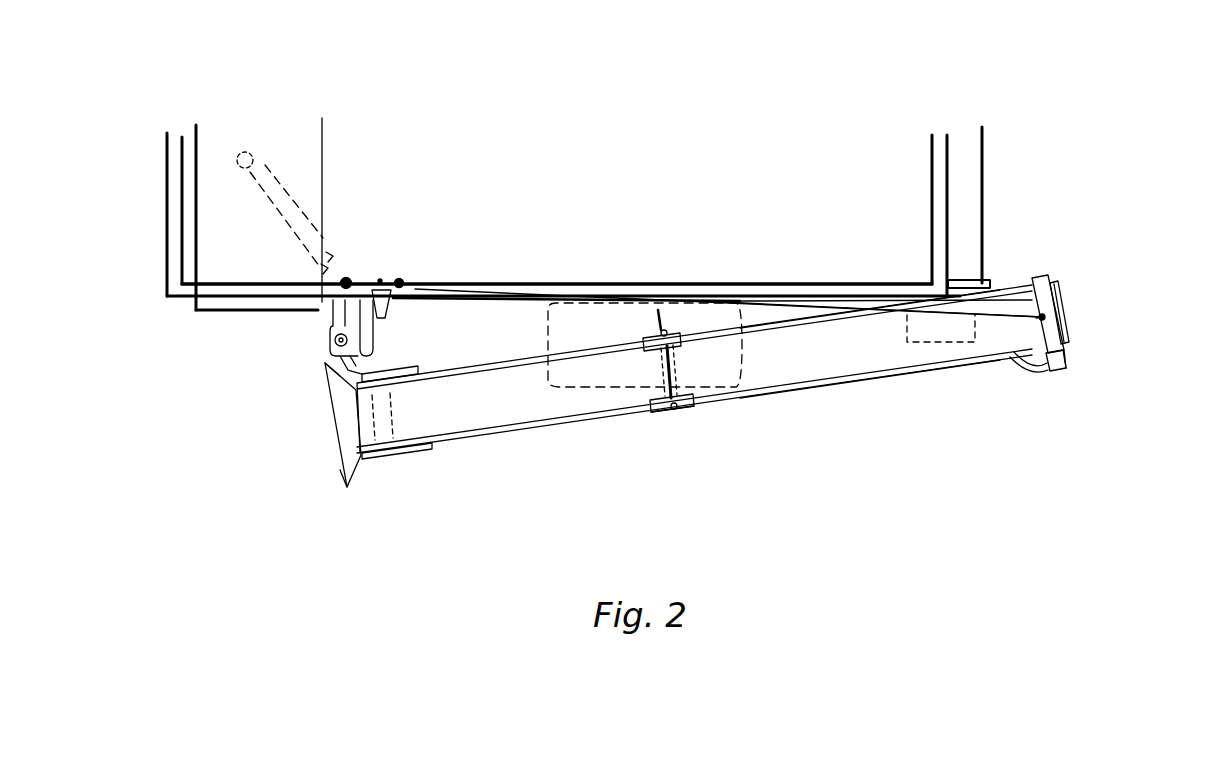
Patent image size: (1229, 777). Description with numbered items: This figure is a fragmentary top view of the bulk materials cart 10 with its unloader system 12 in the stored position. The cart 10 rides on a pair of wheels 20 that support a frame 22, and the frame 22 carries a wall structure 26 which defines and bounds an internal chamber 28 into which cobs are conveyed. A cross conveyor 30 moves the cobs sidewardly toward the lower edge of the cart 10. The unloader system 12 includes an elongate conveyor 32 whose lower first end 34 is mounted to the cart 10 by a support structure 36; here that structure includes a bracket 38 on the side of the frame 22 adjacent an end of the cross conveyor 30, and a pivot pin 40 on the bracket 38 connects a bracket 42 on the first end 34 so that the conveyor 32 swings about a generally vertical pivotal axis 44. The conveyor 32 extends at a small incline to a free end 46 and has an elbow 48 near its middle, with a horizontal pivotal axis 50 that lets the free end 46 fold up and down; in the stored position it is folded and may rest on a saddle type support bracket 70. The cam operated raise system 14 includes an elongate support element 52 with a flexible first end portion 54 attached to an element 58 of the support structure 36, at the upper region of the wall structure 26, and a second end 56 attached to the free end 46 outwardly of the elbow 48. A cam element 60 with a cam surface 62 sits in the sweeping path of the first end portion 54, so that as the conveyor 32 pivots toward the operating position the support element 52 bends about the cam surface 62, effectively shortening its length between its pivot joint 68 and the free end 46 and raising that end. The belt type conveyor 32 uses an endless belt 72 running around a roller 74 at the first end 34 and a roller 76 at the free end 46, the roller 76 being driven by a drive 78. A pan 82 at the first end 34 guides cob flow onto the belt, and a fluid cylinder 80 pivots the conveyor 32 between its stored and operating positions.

The bulk materials cart 10 is at (992, 137).
The unloader system 12 is at (1082, 350).
The cam operated raise system 14 is at (380, 280).
The wheels 20 is at (550, 337).
The frame 22 is at (167, 213).
The wall structure 26 is at (985, 168).
The internal chamber 28 is at (849, 153).
The cross conveyor 30 is at (323, 142).
The elongate conveyor 32 is at (782, 397).
The lower first end 34 is at (368, 460).
The support structure 36 is at (346, 280).
The bracket 38 is at (374, 340).
The pivot pin 40 is at (331, 347).
The bracket 42 is at (333, 358).
The pivotal axis 44 is at (332, 323).
The free end 46 is at (1036, 373).
The elbow 48 is at (673, 412).
The horizontal pivotal axis 50 is at (690, 428).
The elongate support element 52 is at (802, 308).
The flexible first end portion 54 is at (425, 284).
The second end 56 is at (1036, 318).
The element of support structure 58 is at (415, 283).
The cam element 60 is at (447, 308).
The cam surface 62 is at (728, 281).
The pivot joint 68 is at (1070, 300).
The saddle type support bracket 70 is at (950, 342).
The endless belt 72 is at (477, 408).
The roller 74 is at (360, 424).
The roller 76 is at (1052, 282).
The drive 78 is at (1066, 365).
The fluid cylinder 80 is at (282, 175).
The pan 82 is at (347, 487).